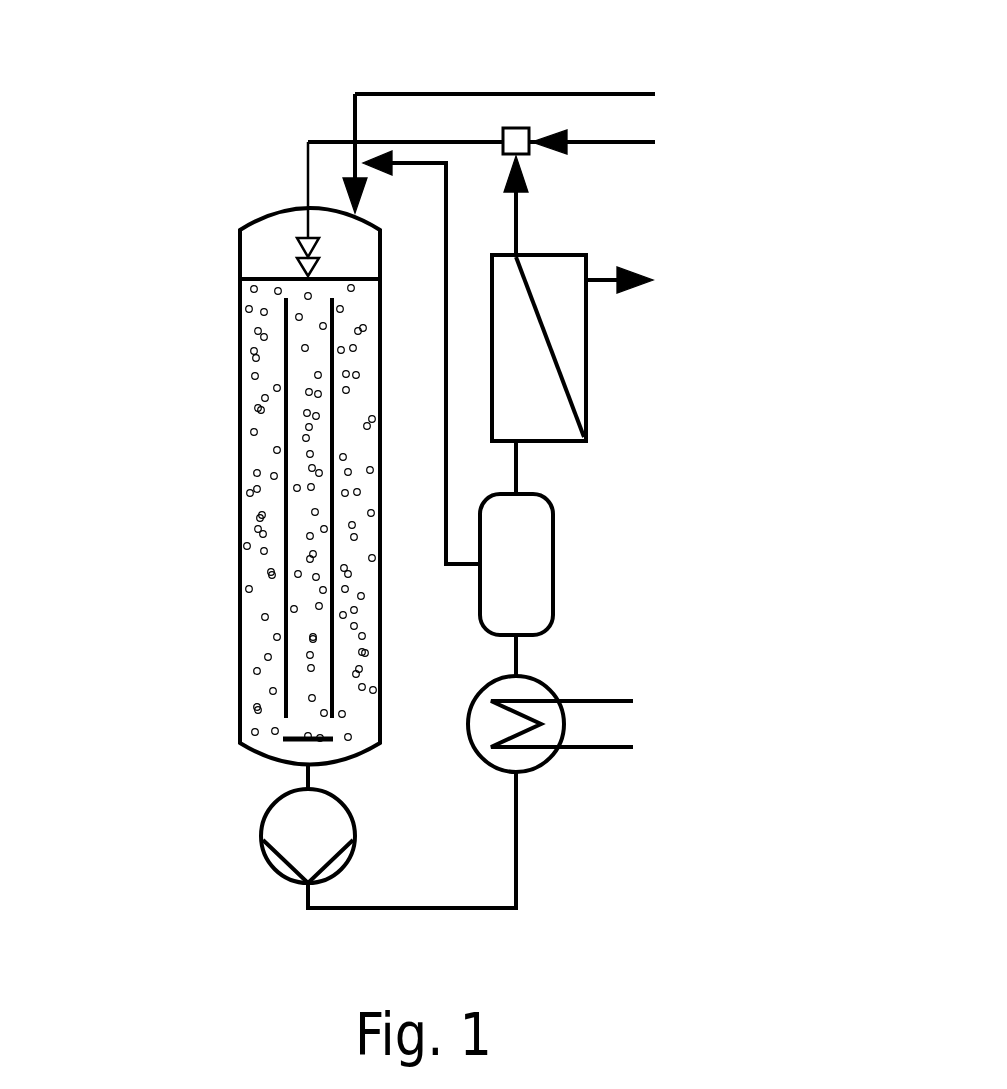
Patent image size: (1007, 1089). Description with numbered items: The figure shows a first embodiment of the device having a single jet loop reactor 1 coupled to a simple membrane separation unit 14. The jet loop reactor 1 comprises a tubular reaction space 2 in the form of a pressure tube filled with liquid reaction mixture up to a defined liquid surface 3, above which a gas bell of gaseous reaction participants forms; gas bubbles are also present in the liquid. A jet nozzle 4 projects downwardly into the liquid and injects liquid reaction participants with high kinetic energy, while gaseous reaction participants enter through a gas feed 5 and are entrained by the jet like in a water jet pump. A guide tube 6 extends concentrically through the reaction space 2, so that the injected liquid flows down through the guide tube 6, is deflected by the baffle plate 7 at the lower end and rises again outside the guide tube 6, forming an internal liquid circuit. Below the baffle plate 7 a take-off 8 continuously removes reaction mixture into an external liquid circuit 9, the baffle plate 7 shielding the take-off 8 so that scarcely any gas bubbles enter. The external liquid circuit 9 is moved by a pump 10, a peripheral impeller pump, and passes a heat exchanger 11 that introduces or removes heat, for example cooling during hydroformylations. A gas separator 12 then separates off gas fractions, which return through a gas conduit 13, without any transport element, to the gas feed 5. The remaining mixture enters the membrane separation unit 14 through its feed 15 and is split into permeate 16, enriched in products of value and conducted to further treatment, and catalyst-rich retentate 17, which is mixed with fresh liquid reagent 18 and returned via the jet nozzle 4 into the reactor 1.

The jet loop reactor 1 is at (217, 288).
The tubular reaction space 2 is at (236, 380).
The liquid surface 3 is at (264, 276).
The jet nozzle 4 is at (300, 252).
The gas feed 5 is at (345, 196).
The guide tube 6 is at (284, 510).
The baffle plate 7 is at (269, 738).
The take-off 8 is at (299, 767).
The external liquid circuit 9 is at (440, 810).
The pump 10 is at (262, 843).
The heat exchanger 11 is at (630, 723).
The gas separator 12 is at (553, 593).
The gas conduit 13 is at (446, 463).
The membrane separation unit 14 is at (607, 378).
The feed 15 is at (517, 483).
The permeate 16 is at (608, 290).
The retentate 17 is at (520, 207).
The fresh liquid reagent 18 is at (608, 142).